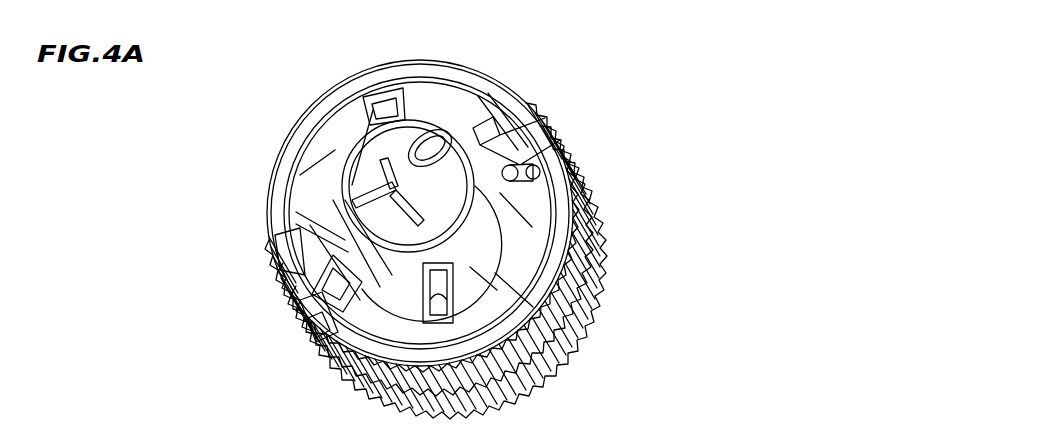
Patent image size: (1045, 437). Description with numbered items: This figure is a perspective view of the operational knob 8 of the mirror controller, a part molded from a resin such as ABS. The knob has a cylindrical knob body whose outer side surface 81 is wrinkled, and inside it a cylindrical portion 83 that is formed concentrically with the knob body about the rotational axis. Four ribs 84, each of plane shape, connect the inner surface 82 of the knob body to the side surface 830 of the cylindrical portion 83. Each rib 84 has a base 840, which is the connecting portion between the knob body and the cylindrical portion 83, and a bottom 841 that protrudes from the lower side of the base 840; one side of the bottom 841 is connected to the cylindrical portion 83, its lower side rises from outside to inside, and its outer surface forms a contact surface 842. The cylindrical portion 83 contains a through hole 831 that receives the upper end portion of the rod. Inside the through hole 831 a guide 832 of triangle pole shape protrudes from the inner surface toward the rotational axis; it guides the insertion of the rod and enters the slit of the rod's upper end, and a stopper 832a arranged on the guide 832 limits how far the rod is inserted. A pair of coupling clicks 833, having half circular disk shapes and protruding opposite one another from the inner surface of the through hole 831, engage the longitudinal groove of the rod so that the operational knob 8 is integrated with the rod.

The operational knob 8 is at (703, 59).
The side surface 81 is at (562, 158).
The inner surface 82 is at (442, 111).
The cylindrical portion 83 is at (540, 318).
The side surface of the cylindrical portion 830 is at (528, 355).
The through hole 831 is at (385, 150).
The guide 832 is at (388, 185).
The stopper 832a is at (312, 322).
The coupling click 833 is at (300, 268).
The rib 84 is at (375, 98).
The base 840 is at (538, 200).
The bottom 841 is at (560, 258).
The contact surface 842 is at (540, 172).